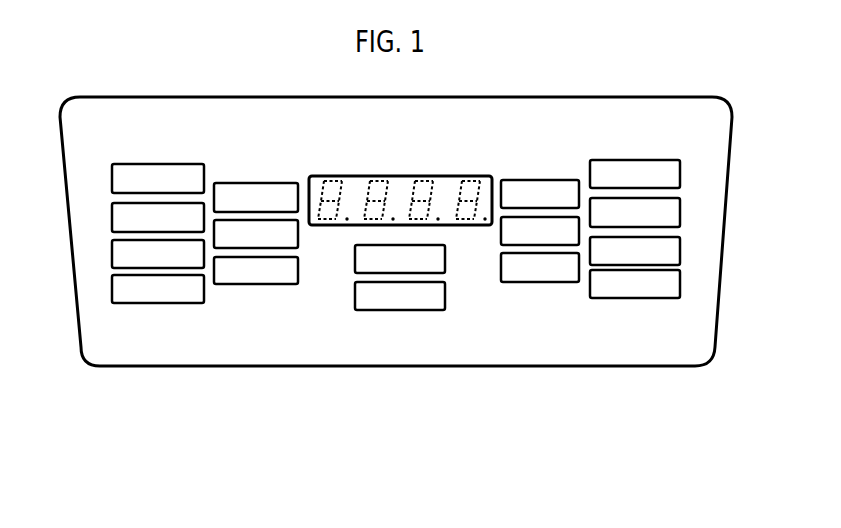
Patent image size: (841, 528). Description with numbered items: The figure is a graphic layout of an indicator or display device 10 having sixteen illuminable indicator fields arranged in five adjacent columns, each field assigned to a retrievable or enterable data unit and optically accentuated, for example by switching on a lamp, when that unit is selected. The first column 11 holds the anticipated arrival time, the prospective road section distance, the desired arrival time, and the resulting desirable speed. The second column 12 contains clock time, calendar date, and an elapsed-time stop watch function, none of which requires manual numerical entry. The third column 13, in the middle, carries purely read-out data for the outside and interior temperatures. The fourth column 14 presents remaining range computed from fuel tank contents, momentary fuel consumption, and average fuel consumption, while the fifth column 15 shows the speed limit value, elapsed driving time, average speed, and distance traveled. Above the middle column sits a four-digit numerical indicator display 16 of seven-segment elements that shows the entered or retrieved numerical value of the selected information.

The indicator or display device 10 is at (322, 348).
The first column 11 is at (142, 309).
The second column 12 is at (261, 291).
The third column 13 is at (400, 315).
The fourth column 14 is at (539, 287).
The fifth column 15 is at (637, 304).
The numerical indicator display 16 is at (400, 190).